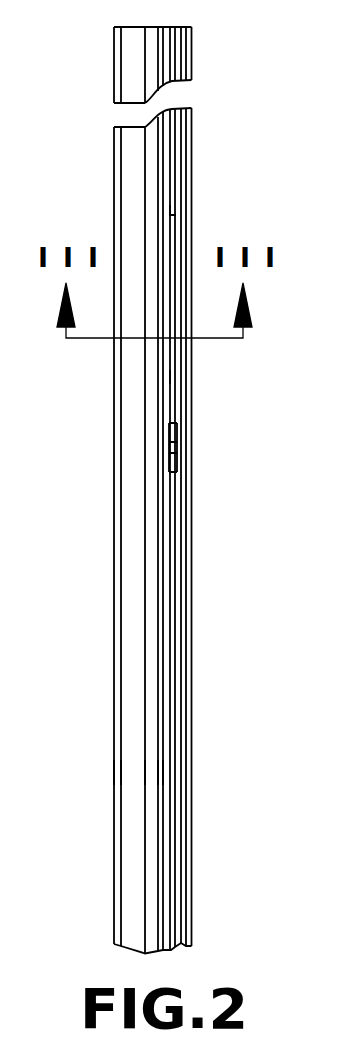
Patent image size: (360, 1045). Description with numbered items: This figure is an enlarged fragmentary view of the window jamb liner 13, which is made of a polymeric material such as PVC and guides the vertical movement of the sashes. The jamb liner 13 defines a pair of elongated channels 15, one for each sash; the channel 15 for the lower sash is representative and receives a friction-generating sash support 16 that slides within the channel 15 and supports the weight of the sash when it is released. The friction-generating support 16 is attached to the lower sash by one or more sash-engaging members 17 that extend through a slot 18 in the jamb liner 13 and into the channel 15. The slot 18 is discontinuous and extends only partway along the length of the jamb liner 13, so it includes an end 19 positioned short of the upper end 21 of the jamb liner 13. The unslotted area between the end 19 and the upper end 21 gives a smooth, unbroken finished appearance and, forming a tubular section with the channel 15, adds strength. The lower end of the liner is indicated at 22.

The jamb liner 13 is at (200, 158).
The elongated channel 15 is at (163, 770).
The friction-generating sash support 16 is at (173, 435).
The sash-engaging member 17 is at (173, 463).
The slot 18 is at (171, 377).
The end of slot 19 is at (172, 215).
The upper end of jamb liner 21 is at (145, 27).
The bottom end 22 is at (138, 952).